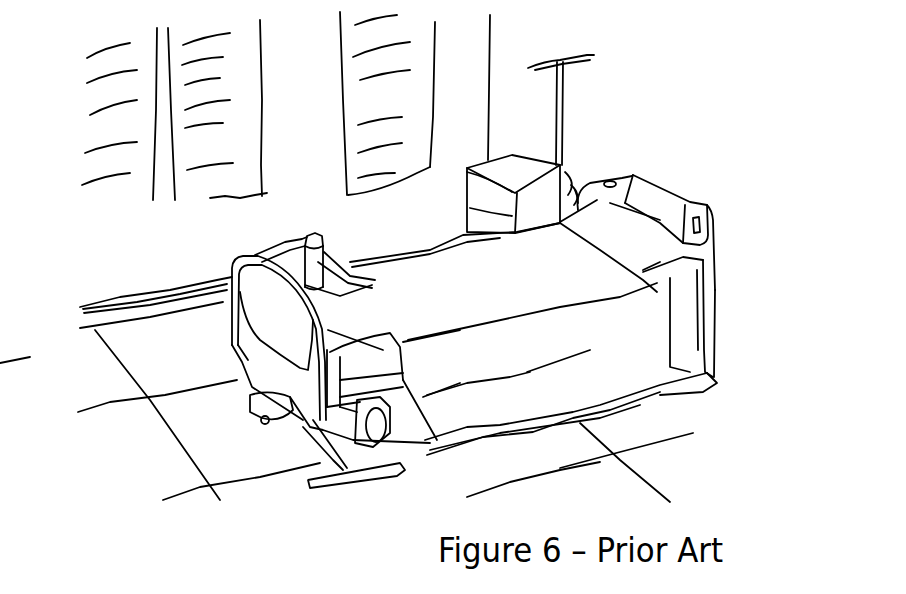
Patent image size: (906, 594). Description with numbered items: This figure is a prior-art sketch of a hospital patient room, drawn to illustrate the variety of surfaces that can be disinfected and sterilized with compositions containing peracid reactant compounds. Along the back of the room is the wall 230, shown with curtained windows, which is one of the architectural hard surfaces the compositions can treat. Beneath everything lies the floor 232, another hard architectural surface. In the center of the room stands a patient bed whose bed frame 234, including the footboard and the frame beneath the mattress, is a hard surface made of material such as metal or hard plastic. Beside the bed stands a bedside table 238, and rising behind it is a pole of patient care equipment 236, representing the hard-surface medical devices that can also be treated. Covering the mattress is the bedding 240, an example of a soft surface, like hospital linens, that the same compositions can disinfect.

The wall 230 is at (323, 148).
The floor 232 is at (593, 503).
The bed frame 234 is at (247, 268).
The patient care equipment 236 is at (560, 92).
The bedside table 238 is at (482, 190).
The bedding 240 is at (535, 282).